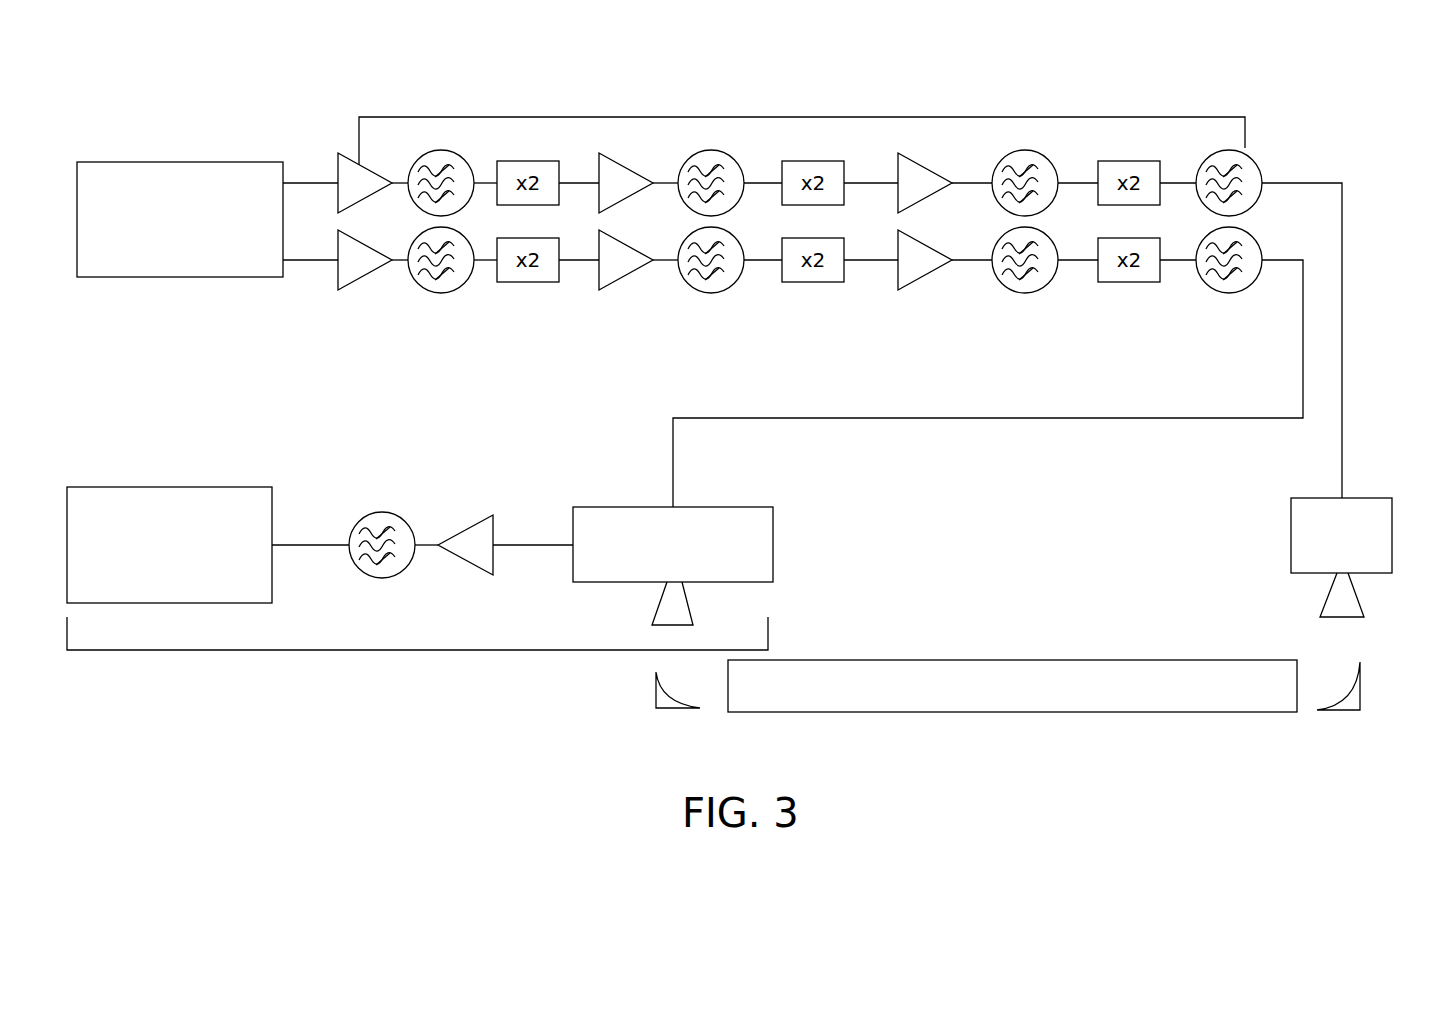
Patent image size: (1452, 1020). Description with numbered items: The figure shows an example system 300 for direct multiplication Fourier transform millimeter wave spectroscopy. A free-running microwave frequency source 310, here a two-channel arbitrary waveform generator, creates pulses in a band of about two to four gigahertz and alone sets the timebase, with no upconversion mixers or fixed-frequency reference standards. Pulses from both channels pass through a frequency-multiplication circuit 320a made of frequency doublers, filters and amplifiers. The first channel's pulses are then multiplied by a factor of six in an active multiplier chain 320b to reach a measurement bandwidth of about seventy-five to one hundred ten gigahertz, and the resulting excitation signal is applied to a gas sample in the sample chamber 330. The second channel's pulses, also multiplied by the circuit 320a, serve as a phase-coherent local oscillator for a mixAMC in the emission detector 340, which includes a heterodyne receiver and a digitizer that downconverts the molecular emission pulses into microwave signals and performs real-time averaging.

The system 300 is at (1268, 73).
The frequency source 310 is at (223, 160).
The frequency-multiplication circuit 320a is at (820, 117).
The active multiplier chain 320b is at (1375, 498).
The sample chamber 330 is at (1112, 712).
The emission detector 340 is at (397, 650).